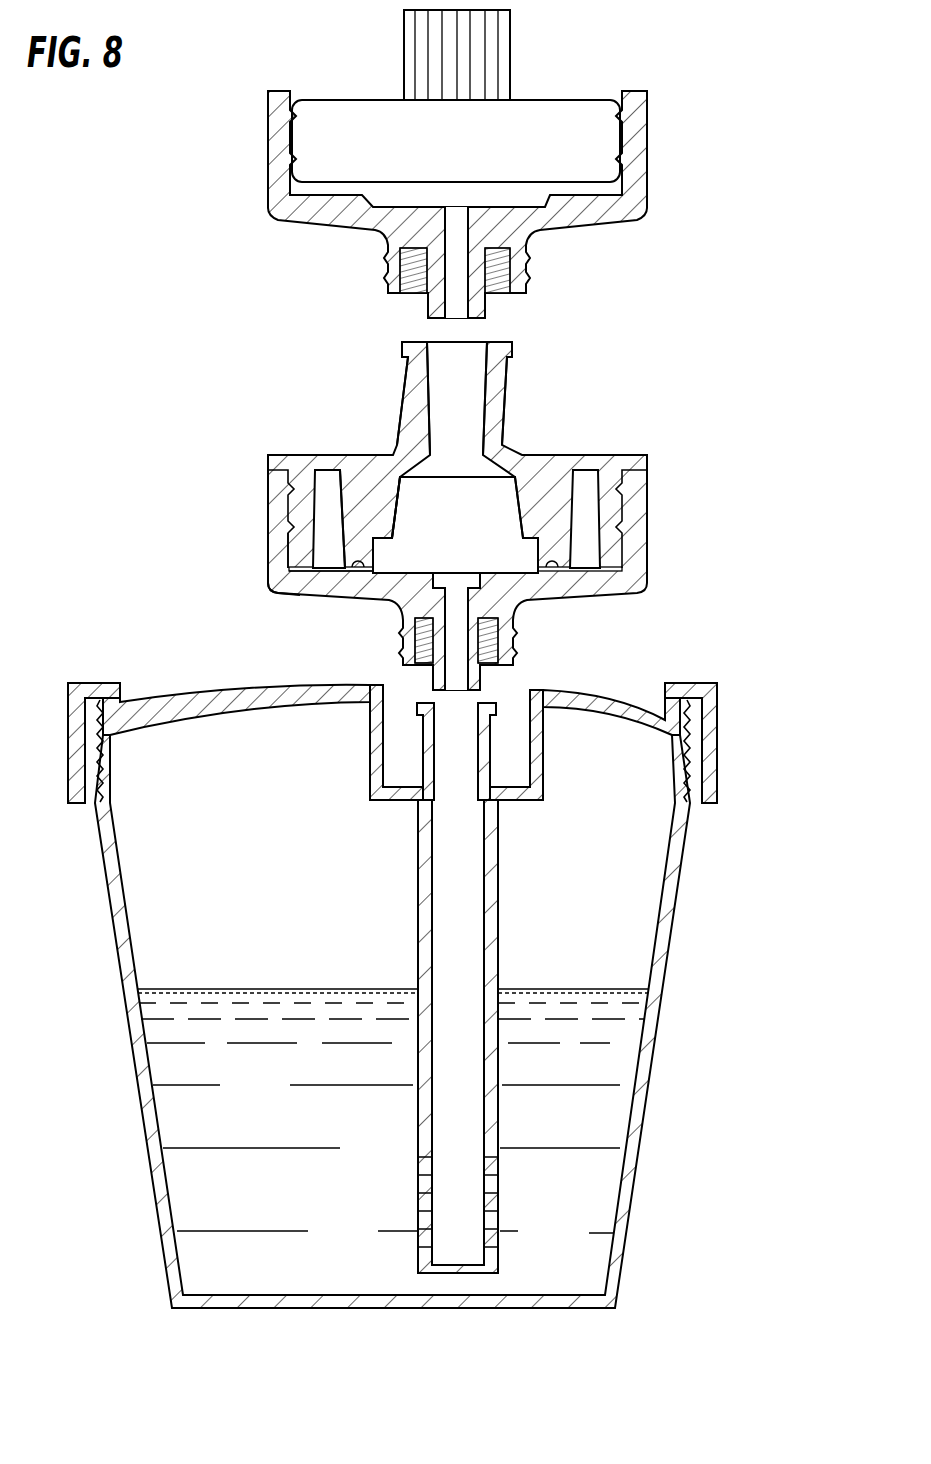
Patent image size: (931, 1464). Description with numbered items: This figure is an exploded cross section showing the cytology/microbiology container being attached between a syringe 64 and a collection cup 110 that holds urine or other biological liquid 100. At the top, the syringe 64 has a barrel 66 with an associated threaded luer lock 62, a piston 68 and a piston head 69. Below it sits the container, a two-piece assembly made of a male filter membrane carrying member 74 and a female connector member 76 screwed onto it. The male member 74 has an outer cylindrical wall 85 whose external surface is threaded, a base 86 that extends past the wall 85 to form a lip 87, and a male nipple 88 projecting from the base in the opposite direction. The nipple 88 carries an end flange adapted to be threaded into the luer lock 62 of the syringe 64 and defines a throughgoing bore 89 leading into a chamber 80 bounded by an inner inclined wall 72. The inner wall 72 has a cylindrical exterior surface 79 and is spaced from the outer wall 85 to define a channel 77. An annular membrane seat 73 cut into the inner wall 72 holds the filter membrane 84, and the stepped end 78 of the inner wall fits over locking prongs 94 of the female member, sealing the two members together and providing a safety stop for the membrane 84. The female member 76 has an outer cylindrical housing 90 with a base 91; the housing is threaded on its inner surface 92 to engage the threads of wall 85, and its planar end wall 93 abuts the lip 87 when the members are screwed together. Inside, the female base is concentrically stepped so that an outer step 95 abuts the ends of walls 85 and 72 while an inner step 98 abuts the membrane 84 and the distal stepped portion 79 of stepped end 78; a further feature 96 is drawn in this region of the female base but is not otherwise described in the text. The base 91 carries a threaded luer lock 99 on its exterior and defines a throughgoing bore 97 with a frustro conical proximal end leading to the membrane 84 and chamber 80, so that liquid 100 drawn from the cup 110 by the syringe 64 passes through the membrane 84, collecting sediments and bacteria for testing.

The syringe luer lock 62 is at (528, 275).
The syringe 64 is at (652, 130).
The barrel 66 is at (268, 130).
The piston 68 is at (512, 62).
The piston head 69 is at (592, 162).
The inner inclined wall 72 is at (392, 503).
The membrane seat 73 is at (520, 563).
The male filter membrane carrying member 74 is at (537, 447).
The female connector member 76 is at (647, 543).
The channel 77 is at (327, 538).
The stepped end 78 is at (621, 575).
The cylindrical exterior surface 79 is at (337, 512).
The chamber 80 is at (455, 525).
The filter membrane 84 is at (553, 570).
The outer cylindrical wall 85 is at (609, 497).
The base 86 is at (581, 453).
The lip 87 is at (647, 460).
The male nipple 88 is at (508, 380).
The throughgoing bore 89 is at (442, 380).
The outer cylindrical housing 90 is at (270, 482).
The base 91 is at (275, 593).
The inner surface 92 is at (292, 550).
The planar end wall 93 is at (282, 463).
The locking prongs 94 is at (375, 545).
The outer step 95 is at (360, 568).
The floor 96 is at (343, 573).
The throughgoing bore 97 is at (460, 675).
The inner step 98 is at (540, 582).
The threaded luer lock 99 is at (517, 645).
The biological liquid 100 is at (600, 1125).
The collection cup 110 is at (678, 954).